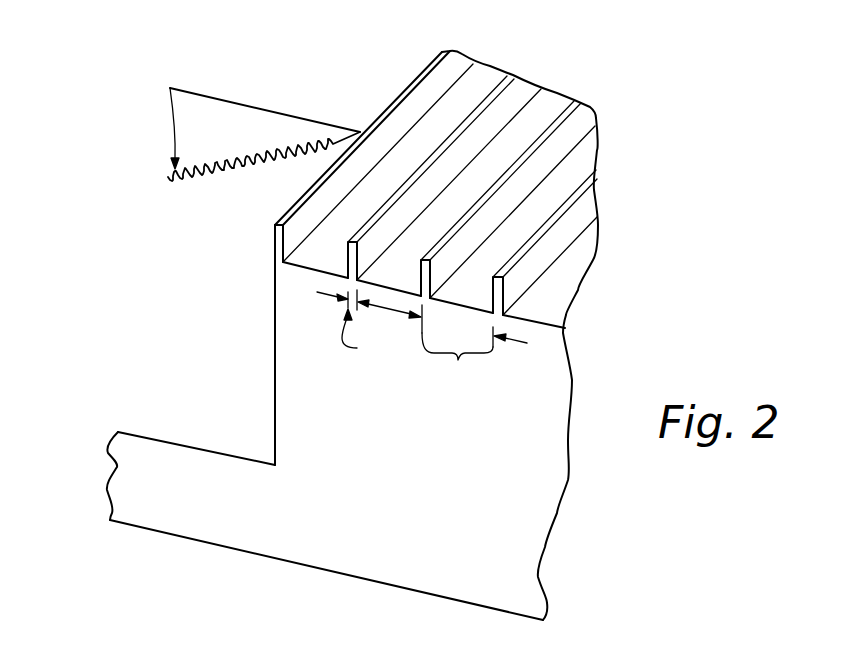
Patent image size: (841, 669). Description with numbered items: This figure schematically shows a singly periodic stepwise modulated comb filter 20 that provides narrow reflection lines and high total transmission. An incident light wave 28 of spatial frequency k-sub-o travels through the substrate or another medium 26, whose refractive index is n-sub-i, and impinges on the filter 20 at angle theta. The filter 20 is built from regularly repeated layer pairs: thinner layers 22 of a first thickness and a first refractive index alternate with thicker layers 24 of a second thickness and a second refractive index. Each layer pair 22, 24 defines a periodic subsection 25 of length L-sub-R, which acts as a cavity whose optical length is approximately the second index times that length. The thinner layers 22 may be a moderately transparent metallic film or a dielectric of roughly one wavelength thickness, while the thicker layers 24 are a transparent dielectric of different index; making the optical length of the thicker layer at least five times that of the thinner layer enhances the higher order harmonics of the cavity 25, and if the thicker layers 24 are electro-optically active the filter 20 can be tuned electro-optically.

The singly periodic stepwise modulated comb filter 20 is at (560, 540).
The thin layers 22 is at (415, 85).
The thick layers 24 is at (458, 93).
The periodic subsection 25 is at (422, 332).
The substrate or adjacent medium 26 is at (140, 485).
The incident light wave 28 is at (229, 173).